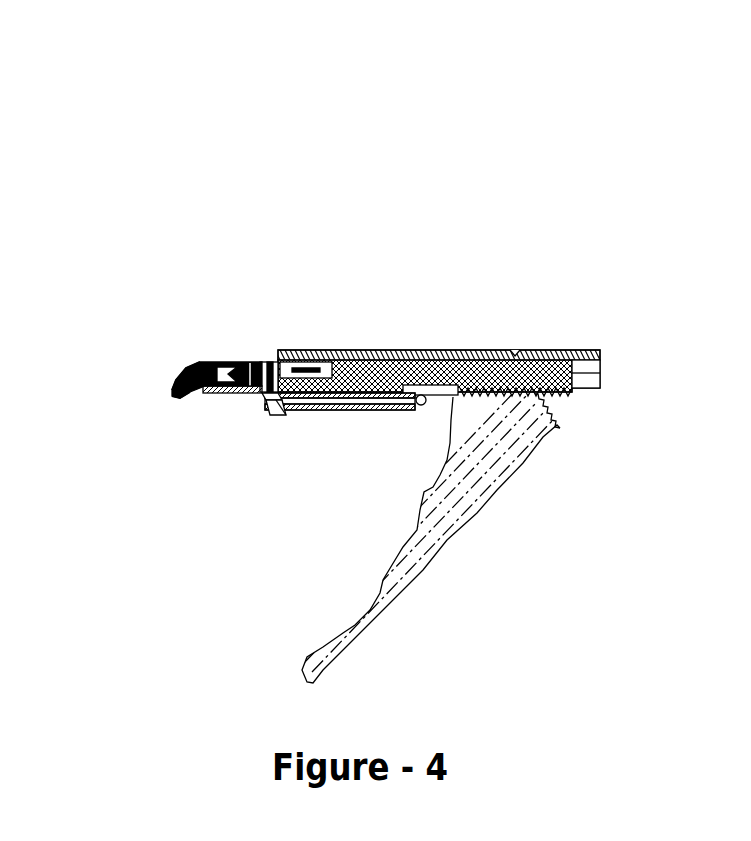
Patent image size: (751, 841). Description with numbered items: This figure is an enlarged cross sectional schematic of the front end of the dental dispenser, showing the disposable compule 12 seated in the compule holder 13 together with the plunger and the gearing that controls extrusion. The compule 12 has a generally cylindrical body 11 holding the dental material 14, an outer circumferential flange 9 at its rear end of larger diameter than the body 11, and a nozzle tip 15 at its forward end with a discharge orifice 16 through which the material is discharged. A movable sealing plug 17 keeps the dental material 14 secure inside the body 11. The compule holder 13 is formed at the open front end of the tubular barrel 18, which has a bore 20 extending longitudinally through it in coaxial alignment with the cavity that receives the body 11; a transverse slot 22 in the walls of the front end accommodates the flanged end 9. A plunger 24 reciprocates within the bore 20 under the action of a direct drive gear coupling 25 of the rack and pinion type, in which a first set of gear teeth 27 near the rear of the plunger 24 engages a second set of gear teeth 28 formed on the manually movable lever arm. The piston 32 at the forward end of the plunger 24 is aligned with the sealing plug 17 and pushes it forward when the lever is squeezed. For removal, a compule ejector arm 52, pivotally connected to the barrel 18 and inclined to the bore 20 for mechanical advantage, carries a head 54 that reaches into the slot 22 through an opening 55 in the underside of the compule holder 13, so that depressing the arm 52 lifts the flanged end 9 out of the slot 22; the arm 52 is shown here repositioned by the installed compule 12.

The outer circumferential flange 9 is at (275, 345).
The body 11 is at (230, 350).
The disposable compule 12 is at (185, 355).
The compule holder 13 is at (233, 397).
The dental material 14 is at (207, 357).
The nozzle tip 15 is at (170, 377).
The discharge orifice 16 is at (177, 398).
The movable sealing plug 17 is at (248, 357).
The tubular barrel 18 is at (402, 350).
The bore 20 is at (317, 348).
The slot 22 is at (283, 358).
The plunger 24 is at (442, 355).
The direct drive gear coupling 25 is at (448, 398).
The first set of gear teeth 27 is at (553, 370).
The second set of gear teeth 28 is at (568, 417).
The piston 32 is at (270, 418).
The compule ejector arm 52 is at (325, 405).
The head 54 is at (263, 408).
The opening 55 is at (260, 397).